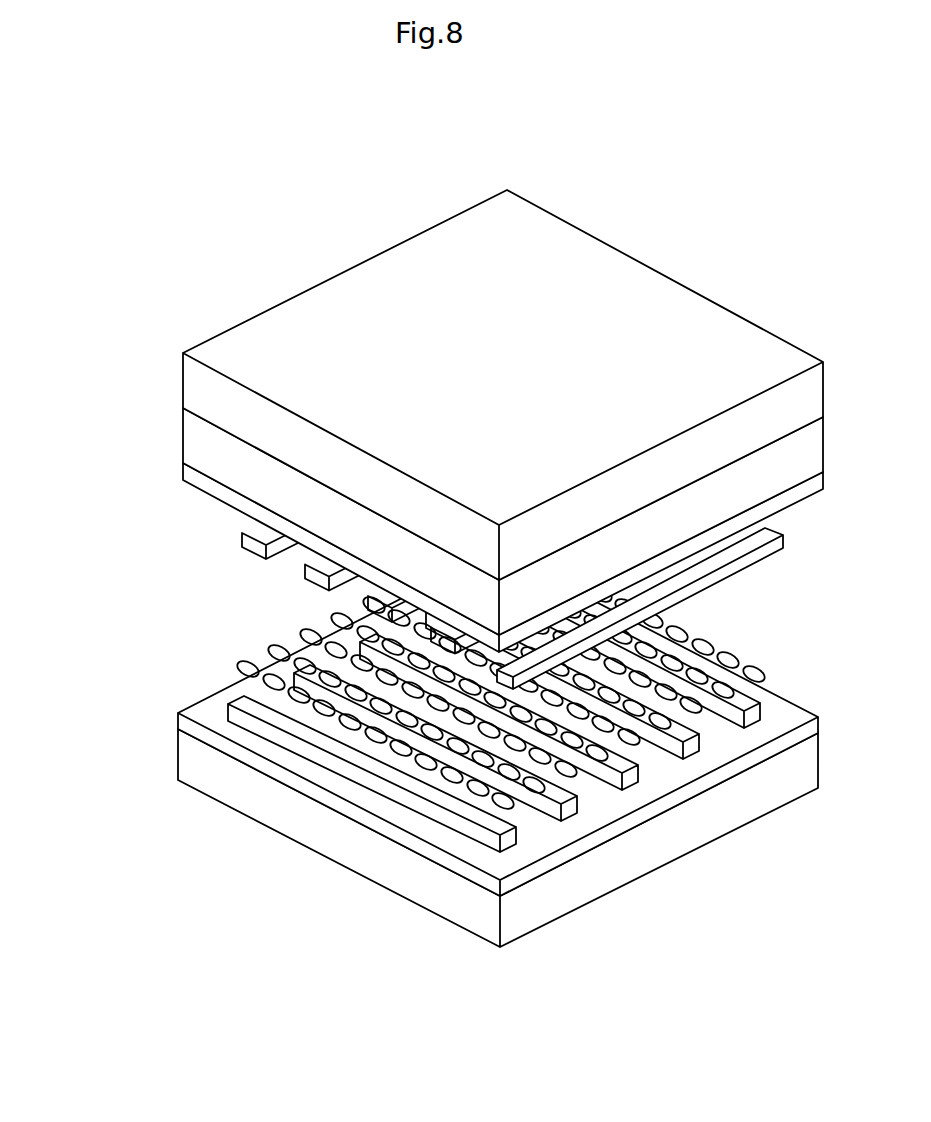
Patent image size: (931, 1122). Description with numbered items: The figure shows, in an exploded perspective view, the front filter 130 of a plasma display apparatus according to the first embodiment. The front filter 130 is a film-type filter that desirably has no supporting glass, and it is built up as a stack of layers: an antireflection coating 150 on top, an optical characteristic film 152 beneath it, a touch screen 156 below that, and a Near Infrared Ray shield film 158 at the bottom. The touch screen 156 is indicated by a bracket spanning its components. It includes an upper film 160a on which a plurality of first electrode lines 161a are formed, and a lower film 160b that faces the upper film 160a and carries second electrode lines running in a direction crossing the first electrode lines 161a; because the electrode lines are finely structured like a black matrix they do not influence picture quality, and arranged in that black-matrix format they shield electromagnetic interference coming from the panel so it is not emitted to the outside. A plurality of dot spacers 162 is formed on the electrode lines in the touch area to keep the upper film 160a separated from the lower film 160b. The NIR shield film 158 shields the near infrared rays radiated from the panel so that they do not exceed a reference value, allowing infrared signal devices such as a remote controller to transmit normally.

The front filter 130 is at (107, 179).
The antireflection coating 150 is at (195, 391).
The optical characteristic film 152 is at (195, 442).
The touch screen 156 is at (97, 470).
The NIR shield film 158 is at (195, 760).
The upper film 160a is at (183, 473).
The lower film 160b is at (178, 718).
The first electrode lines 161a is at (243, 543).
The dot spacers 162 is at (237, 668).